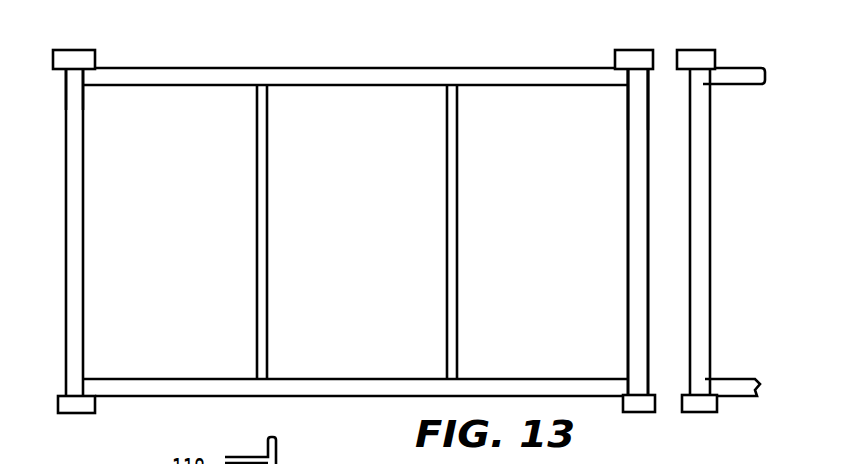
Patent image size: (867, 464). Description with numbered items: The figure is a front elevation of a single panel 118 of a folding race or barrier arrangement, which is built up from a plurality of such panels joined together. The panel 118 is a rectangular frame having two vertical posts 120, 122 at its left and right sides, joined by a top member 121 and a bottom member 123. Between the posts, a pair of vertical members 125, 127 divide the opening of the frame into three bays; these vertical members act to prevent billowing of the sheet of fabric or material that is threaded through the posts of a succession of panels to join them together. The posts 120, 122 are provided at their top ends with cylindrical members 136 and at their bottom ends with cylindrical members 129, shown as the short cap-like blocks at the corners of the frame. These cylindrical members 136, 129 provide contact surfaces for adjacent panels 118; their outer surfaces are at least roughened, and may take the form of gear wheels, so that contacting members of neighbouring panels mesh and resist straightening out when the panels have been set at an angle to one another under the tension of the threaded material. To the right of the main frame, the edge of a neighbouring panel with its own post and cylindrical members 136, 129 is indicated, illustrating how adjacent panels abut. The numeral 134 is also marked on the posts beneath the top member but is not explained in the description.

The panel 118 is at (409, 234).
The post 120 is at (78, 230).
The top member 121 is at (384, 76).
The post 122 is at (640, 197).
The bottom member 123 is at (148, 387).
The vertical member 125 is at (267, 333).
The vertical member 127 is at (455, 338).
The cylindrical member 129 is at (93, 399).
The post sleeve 134 is at (57, 97).
The cylindrical member 136 is at (88, 58).